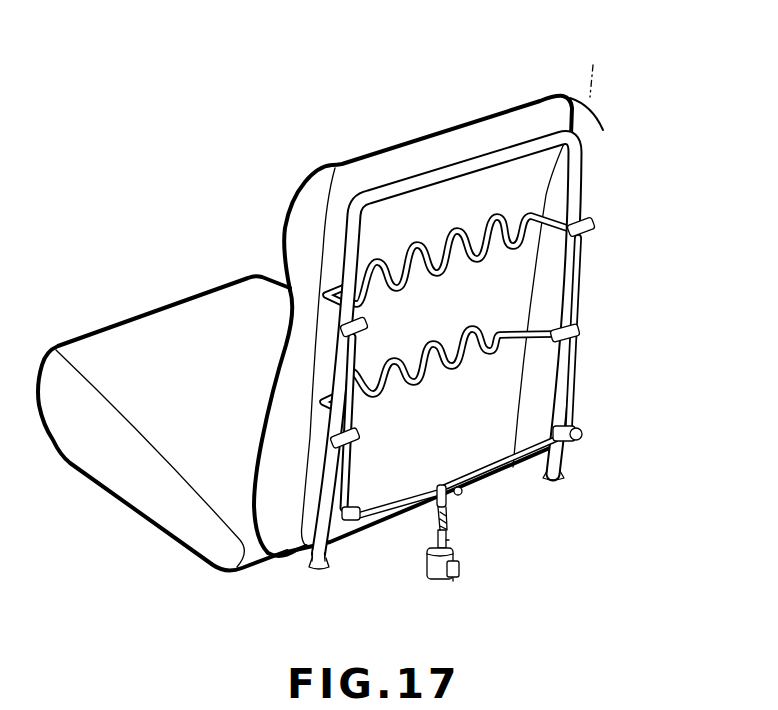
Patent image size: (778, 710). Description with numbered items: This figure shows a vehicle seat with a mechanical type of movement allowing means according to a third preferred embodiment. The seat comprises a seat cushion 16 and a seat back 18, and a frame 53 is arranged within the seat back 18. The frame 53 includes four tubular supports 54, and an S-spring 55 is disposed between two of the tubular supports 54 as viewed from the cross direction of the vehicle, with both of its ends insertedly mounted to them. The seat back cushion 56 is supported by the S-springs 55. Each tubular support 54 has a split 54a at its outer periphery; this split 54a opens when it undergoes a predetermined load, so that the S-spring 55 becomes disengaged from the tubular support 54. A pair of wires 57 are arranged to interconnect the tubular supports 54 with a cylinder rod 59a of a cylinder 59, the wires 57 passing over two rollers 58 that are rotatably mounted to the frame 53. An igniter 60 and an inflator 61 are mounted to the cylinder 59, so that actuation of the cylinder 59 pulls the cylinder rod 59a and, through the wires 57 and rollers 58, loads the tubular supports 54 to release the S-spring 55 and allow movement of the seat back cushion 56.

The seat cushion 16 is at (75, 452).
The seat back 18 is at (595, 83).
The frame 53 is at (583, 157).
The tubular support 54 is at (343, 320).
The split 54a is at (595, 224).
The S-spring 55 is at (457, 229).
The seat back cushion 56 is at (322, 180).
The wire 57 is at (360, 355).
The roller 58 is at (350, 522).
The cylinder 59 is at (428, 578).
The cylinder rod 59a is at (449, 540).
The igniter 60 is at (457, 580).
The inflator 61 is at (460, 573).